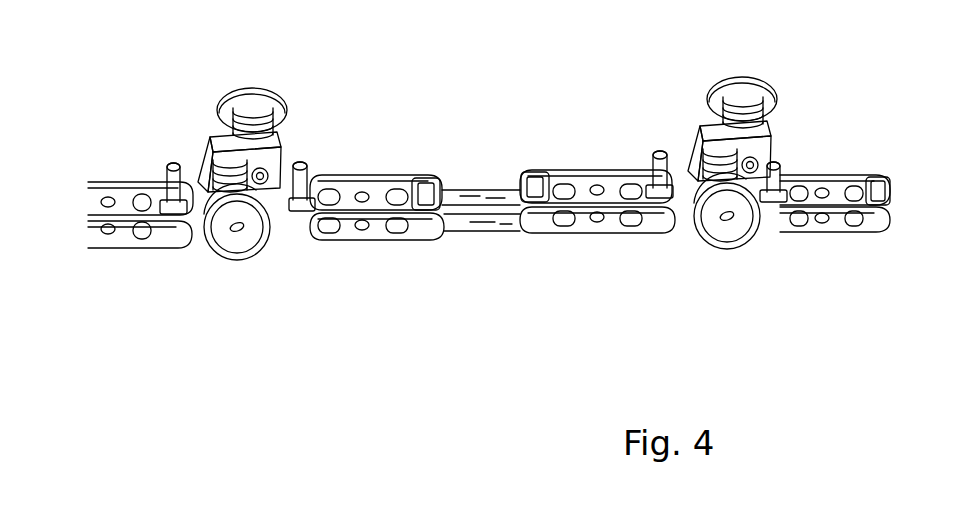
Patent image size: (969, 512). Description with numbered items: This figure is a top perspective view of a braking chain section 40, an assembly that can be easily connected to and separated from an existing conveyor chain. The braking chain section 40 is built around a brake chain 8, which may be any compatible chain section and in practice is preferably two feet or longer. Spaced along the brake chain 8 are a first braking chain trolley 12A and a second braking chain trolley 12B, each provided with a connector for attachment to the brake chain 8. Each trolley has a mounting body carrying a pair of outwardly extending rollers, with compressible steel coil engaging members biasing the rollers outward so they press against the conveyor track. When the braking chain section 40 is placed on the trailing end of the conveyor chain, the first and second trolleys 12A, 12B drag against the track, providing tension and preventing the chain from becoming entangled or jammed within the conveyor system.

The brake chain 8 is at (647, 160).
The first braking chain trolley 12A is at (232, 286).
The second braking chain trolley 12B is at (728, 298).
The braking chain section 40 is at (862, 305).